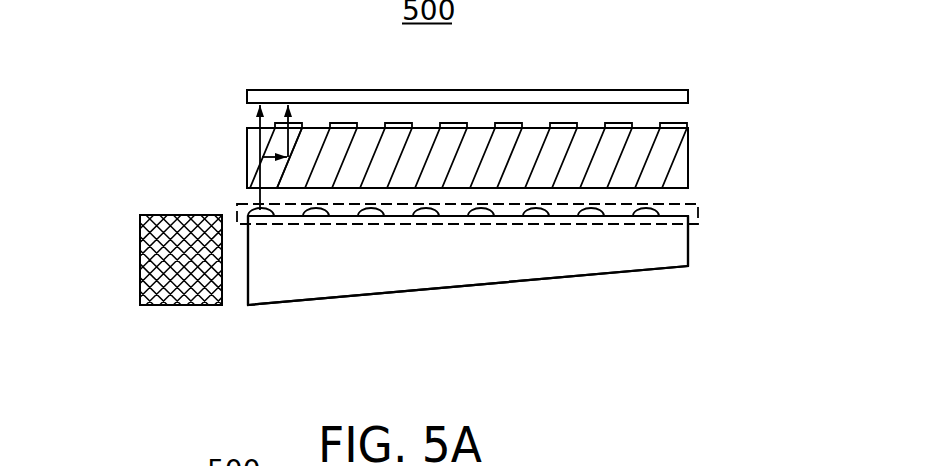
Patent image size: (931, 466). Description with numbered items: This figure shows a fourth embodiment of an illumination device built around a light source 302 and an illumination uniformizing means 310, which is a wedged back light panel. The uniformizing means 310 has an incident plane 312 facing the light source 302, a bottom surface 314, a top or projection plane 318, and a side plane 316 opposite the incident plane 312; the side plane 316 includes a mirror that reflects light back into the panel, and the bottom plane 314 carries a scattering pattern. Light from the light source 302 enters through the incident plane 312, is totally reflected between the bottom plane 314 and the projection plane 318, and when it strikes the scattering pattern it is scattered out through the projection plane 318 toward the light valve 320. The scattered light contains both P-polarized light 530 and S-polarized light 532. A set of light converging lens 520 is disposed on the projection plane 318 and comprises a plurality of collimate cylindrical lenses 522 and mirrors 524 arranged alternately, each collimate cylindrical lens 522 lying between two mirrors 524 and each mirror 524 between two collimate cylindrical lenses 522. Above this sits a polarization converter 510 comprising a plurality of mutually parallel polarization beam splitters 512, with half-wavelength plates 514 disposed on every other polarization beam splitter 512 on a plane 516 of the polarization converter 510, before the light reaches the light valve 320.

The light source 302 is at (140, 261).
The illumination uniformizing means 310 is at (490, 262).
The incident plane 312 is at (247, 280).
The bottom surface 314 is at (402, 286).
The side plane 316 is at (686, 243).
The top plane 318 is at (627, 226).
The light valve 320 is at (690, 101).
The polarization converter 510 is at (690, 181).
The polarization beam splitters 512 is at (348, 150).
The ½ wavelength plates 514 is at (288, 157).
The plane of the polarization converter 516 is at (662, 124).
The set of light converging lens 520 is at (707, 222).
The collimate cylindrical lenses 522 is at (252, 212).
The mirrors 524 is at (249, 203).
The P-polarized light 530 is at (247, 131).
The S-polarized light 532 is at (275, 124).